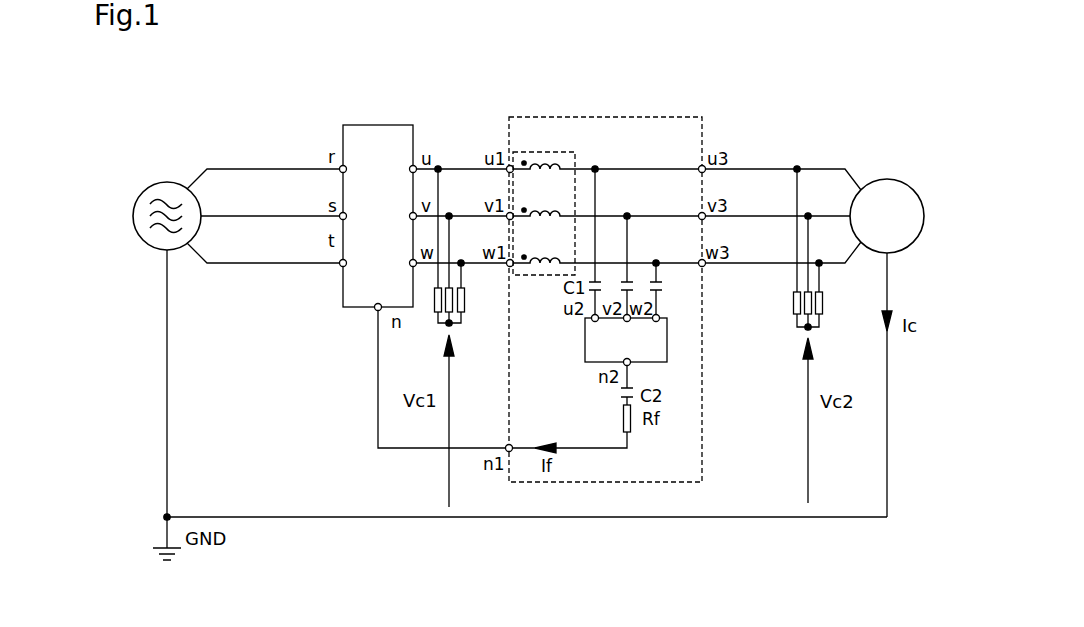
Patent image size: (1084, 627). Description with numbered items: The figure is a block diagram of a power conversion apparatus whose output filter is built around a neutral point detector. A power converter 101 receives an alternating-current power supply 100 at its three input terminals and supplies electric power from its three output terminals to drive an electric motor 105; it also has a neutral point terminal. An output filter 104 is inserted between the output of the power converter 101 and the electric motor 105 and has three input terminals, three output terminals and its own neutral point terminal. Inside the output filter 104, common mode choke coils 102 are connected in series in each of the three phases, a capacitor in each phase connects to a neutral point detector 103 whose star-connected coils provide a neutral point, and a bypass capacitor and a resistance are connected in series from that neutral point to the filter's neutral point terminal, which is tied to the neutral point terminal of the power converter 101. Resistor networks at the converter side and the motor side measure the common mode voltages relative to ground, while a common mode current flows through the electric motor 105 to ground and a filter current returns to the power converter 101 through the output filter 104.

The alternating-current power supply 100 is at (167, 181).
The power converter 101 is at (378, 216).
The common mode choke coils 102 is at (607, 203).
The neutral point detector 103 is at (626, 340).
The output filter 104 is at (605, 286).
The electric motor 105 is at (887, 178).